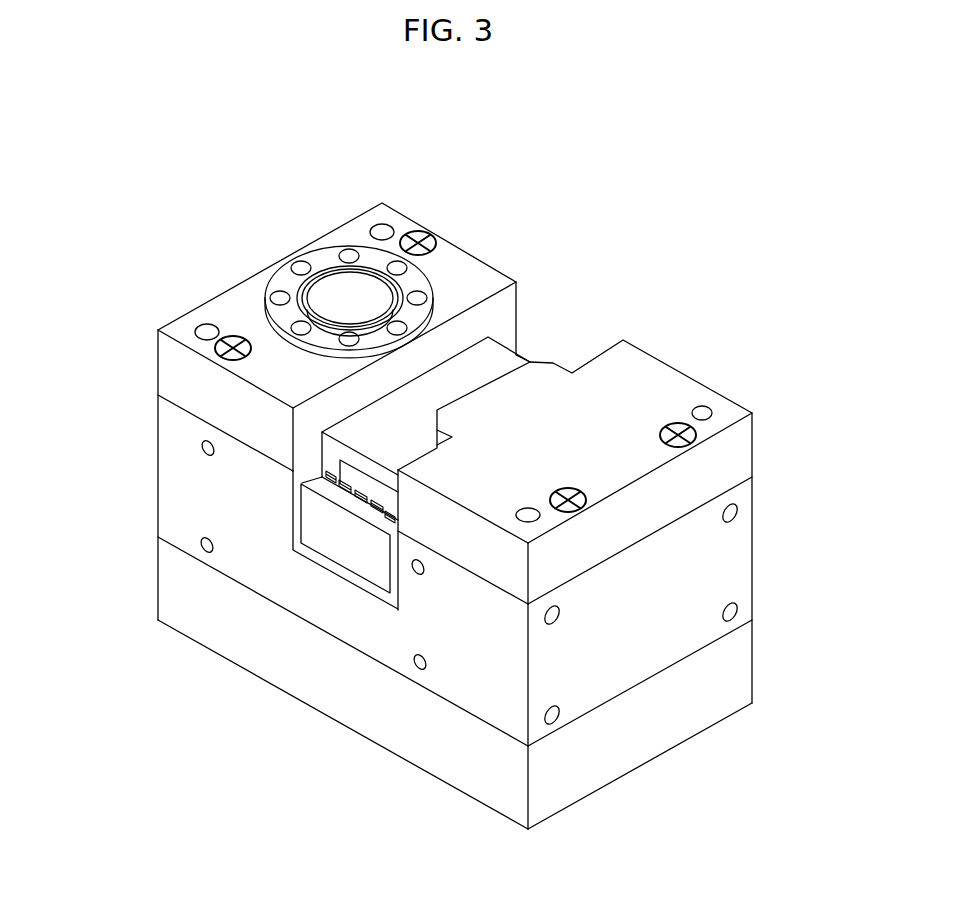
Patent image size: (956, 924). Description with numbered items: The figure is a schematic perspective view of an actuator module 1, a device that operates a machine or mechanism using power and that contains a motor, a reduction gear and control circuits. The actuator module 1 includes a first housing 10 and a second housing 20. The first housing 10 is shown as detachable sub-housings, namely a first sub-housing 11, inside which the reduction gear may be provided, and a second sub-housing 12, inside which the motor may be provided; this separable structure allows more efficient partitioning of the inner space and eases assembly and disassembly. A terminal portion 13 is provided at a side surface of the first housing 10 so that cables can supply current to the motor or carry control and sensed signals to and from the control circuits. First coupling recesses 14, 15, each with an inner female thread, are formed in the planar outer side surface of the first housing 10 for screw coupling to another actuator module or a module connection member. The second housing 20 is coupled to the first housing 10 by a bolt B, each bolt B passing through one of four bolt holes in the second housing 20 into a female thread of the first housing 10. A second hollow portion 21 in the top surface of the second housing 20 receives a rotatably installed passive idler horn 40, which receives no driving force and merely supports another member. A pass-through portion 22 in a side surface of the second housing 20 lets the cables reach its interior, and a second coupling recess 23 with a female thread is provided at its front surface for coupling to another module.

The actuator module 1 is at (579, 201).
The first housing 10 is at (63, 449).
The first sub-housing 11 is at (175, 579).
The second sub-housing 12 is at (175, 483).
The terminal portion 13 is at (343, 573).
The first coupling recess 14 is at (415, 668).
The first coupling recess 15 is at (558, 716).
The second housing 20 is at (175, 365).
The second hollow portion 21 is at (348, 296).
The pass-through portion 22 is at (373, 481).
The second coupling recess 23 is at (704, 413).
The idler horn 40 is at (415, 278).
The bolt B is at (233, 345).